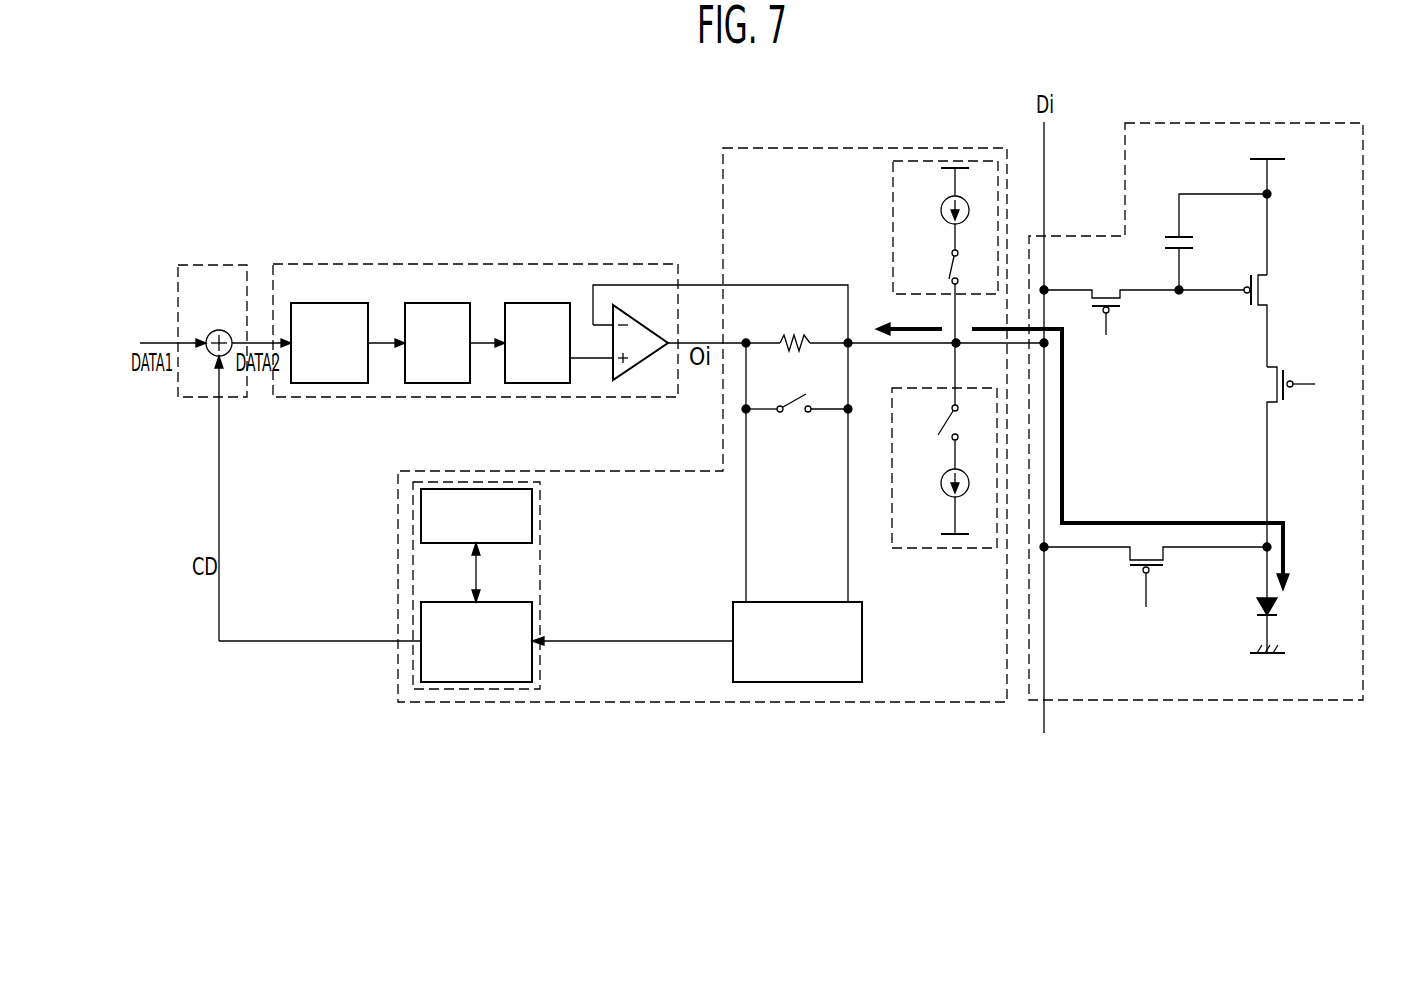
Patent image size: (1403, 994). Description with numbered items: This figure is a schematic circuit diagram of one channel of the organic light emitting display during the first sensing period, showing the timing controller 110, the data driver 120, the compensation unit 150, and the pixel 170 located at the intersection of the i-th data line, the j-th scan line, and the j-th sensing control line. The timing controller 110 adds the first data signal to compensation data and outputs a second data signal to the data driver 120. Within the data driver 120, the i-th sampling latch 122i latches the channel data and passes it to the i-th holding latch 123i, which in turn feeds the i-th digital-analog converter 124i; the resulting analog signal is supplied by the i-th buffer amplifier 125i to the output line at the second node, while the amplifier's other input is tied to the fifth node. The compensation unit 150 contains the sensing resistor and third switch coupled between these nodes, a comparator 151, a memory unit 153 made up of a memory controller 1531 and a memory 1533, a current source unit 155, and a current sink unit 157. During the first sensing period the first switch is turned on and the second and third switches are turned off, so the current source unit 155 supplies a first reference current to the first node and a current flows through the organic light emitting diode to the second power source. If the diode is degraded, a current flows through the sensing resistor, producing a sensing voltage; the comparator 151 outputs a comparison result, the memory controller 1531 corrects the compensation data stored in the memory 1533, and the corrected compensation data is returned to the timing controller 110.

The timing controller 110 is at (212, 265).
The data driver 120 is at (560, 325).
The i-th sampling latch 122i is at (340, 383).
The i-th holding latch 123i is at (437, 383).
The i-th digital-analog converter 124i is at (540, 383).
The i-th buffer amplifier 125i is at (640, 362).
The compensation unit 150 is at (863, 148).
The comparator 151 is at (797, 682).
The memory unit 153 is at (510, 617).
The memory controller 1531 is at (532, 612).
The memory 1533 is at (532, 518).
The current source unit 155 is at (950, 161).
The current sink unit 157 is at (950, 548).
The pixel 170 is at (1248, 123).